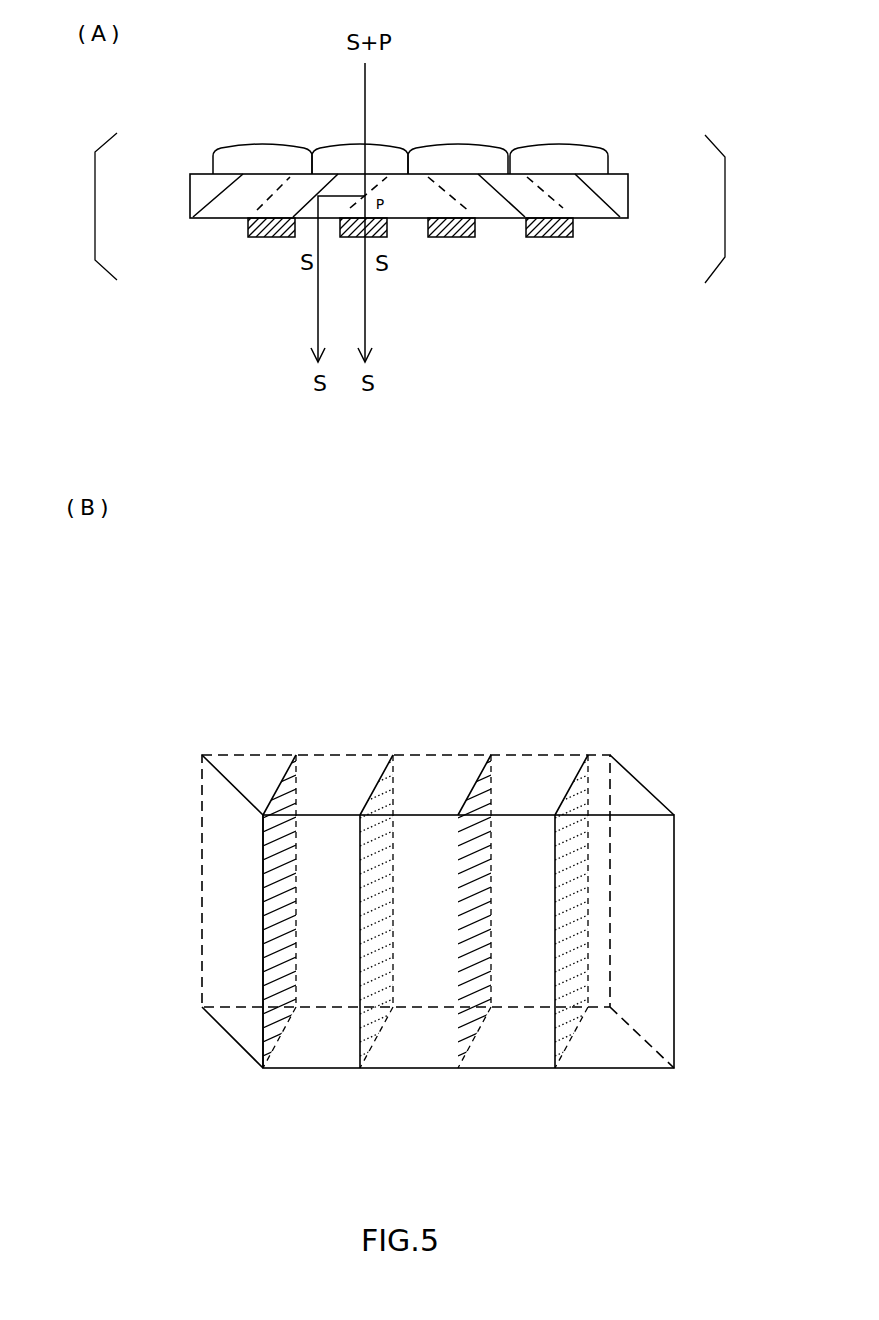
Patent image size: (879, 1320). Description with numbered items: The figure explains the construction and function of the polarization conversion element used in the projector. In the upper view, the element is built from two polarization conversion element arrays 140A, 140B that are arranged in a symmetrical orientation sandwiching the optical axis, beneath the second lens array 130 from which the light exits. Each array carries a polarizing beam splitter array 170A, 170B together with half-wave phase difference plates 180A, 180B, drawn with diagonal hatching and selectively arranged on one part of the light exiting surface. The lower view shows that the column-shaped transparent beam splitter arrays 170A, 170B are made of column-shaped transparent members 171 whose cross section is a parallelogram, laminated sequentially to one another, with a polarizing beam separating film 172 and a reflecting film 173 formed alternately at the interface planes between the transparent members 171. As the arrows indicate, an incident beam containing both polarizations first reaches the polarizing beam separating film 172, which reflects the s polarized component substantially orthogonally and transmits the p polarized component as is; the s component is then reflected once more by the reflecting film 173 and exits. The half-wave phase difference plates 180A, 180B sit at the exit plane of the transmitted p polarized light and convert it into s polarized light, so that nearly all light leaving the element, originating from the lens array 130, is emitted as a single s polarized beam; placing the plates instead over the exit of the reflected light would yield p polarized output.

The second lens array 130 is at (237, 145).
The polarization conversion element array 140A is at (65, 206).
The polarization conversion element array 140B is at (757, 209).
The polarizing beam splitter array 170A is at (190, 193).
The polarizing beam splitter array 170B is at (628, 197).
The column-shaped transparent member 171 is at (567, 190).
The polarizing beam separating film 172 is at (390, 185).
The reflecting film 173 is at (307, 203).
The λ/2 phase difference plate 180A is at (267, 238).
The λ/2 phase difference plate 180B is at (547, 238).